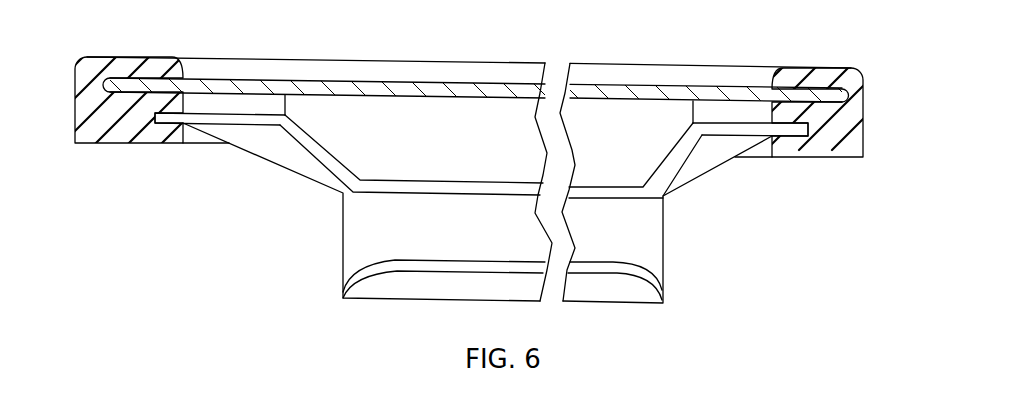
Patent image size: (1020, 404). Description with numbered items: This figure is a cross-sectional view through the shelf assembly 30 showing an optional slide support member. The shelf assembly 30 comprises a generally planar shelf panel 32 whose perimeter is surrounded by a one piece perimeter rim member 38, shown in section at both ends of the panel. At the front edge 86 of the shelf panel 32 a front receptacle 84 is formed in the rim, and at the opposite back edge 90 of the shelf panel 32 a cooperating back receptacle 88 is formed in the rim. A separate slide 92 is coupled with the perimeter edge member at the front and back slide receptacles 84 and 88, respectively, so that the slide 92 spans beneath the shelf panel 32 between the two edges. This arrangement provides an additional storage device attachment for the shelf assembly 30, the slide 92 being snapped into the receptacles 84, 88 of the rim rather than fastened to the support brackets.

The shelf assembly 30 is at (247, 245).
The shelf panel 32 is at (502, 92).
The perimeter rim member 38 is at (430, 77).
The front receptacle 84 is at (163, 125).
The front edge 86 is at (104, 76).
The back receptacle 88 is at (797, 139).
The back edge 90 is at (840, 95).
The slide 92 is at (658, 235).